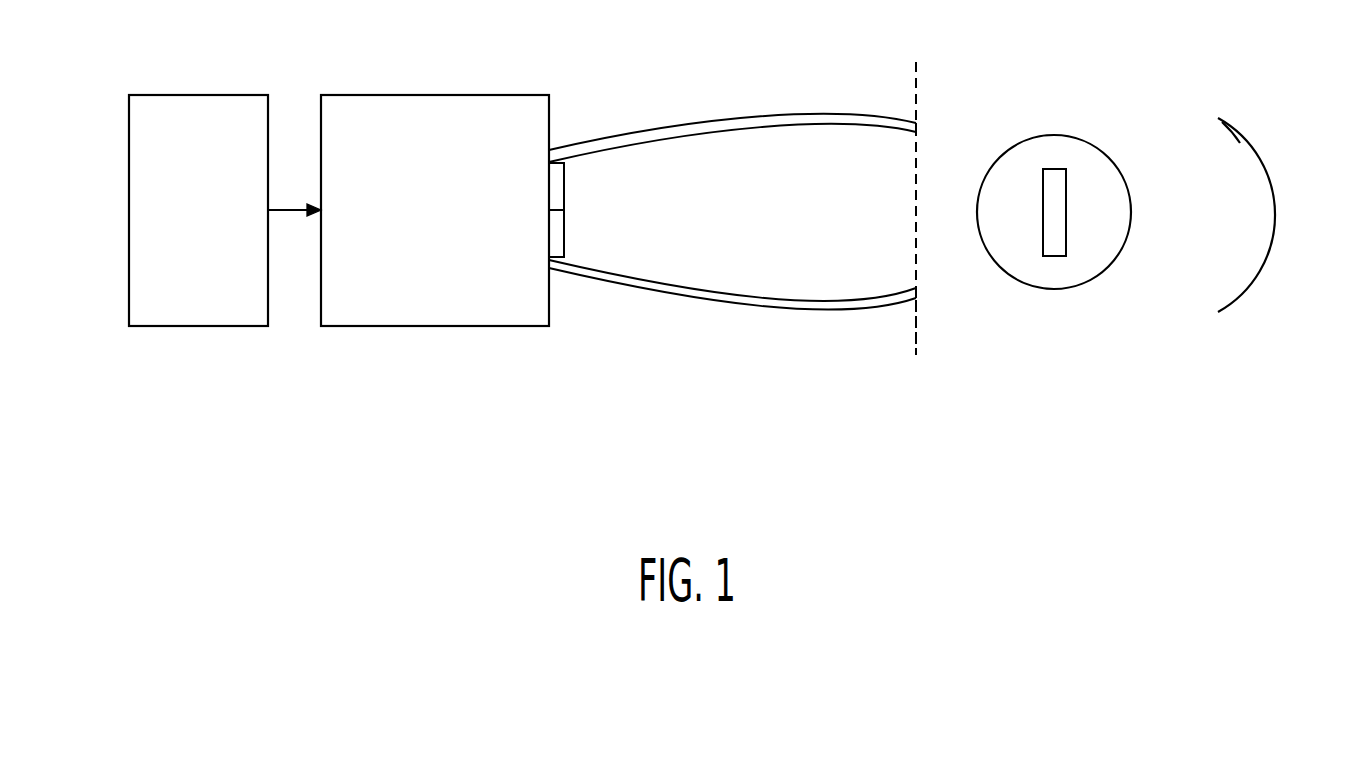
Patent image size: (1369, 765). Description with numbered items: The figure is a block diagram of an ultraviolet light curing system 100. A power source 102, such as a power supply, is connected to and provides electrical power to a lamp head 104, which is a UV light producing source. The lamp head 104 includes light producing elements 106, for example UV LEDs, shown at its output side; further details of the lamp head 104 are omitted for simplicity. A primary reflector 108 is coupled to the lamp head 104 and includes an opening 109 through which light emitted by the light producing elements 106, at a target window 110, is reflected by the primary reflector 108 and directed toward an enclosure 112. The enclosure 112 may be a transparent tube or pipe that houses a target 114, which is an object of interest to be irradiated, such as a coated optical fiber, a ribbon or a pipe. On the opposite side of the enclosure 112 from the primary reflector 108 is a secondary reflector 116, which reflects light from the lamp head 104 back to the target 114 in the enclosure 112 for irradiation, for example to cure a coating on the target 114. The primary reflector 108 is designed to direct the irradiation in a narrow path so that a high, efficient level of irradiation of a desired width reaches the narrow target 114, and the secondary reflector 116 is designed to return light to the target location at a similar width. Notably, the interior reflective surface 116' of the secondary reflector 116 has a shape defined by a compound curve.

The UV light curing system 100 is at (497, 452).
The power source 102 is at (181, 253).
The lamp head 104 is at (418, 234).
The light producing elements 106 is at (567, 187).
The primary reflector 108 is at (755, 312).
The opening 109 is at (917, 157).
The target window 110 is at (917, 355).
The enclosure 112 is at (1082, 140).
The target 114 is at (1056, 257).
The secondary reflector 116 is at (1246, 268).
The interior reflective surface 116' is at (1211, 101).